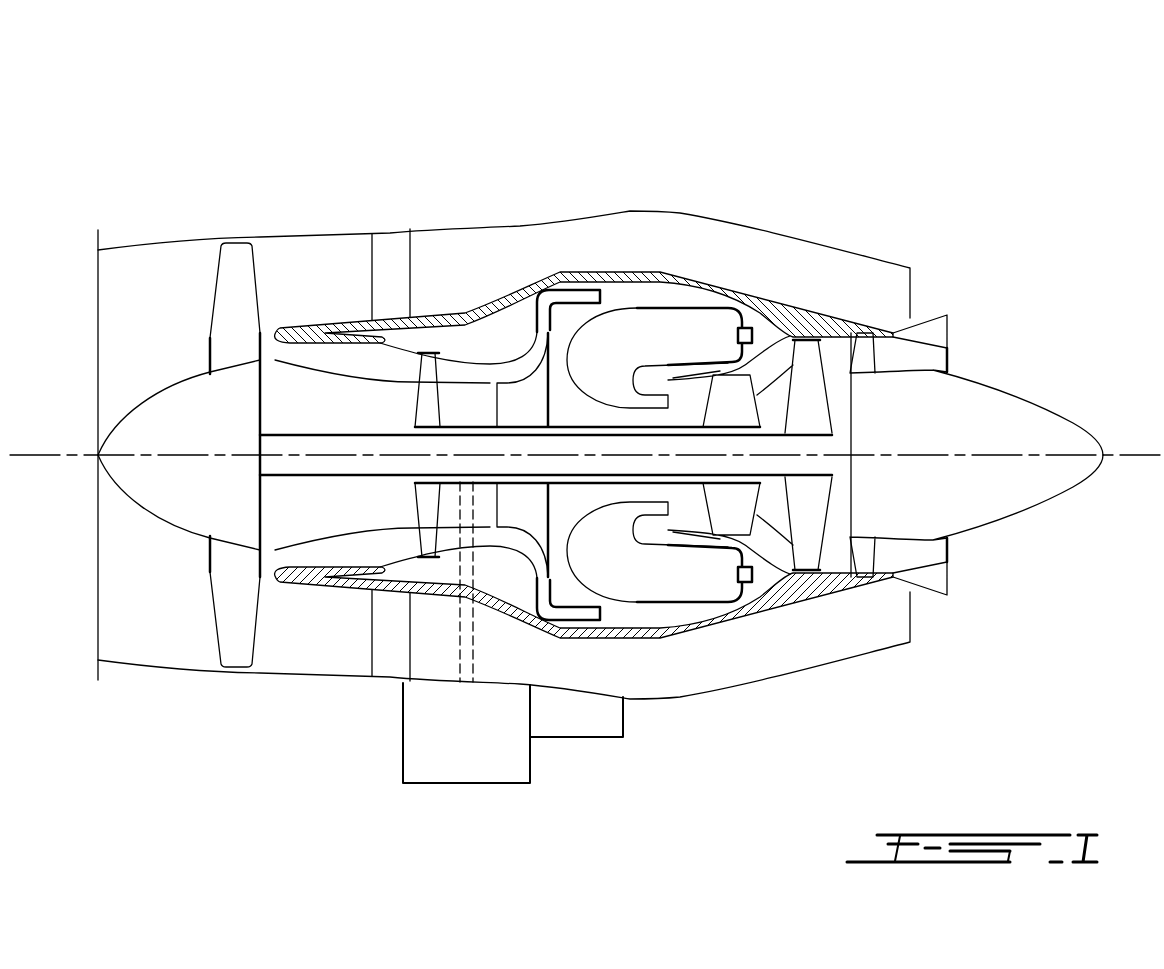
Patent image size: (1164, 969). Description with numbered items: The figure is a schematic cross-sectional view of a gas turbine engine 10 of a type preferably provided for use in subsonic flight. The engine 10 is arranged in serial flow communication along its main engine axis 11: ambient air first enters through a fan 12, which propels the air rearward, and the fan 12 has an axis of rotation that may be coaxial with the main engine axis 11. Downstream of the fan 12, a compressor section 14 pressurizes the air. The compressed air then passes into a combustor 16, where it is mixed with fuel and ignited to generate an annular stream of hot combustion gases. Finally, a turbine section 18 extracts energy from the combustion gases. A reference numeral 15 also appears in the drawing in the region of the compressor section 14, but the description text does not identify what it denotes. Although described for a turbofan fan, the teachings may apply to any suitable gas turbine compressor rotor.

The gas turbine engine 10 is at (818, 118).
The main engine axis 11 is at (1138, 454).
The fan 12 is at (232, 592).
The compressor section 14 is at (458, 365).
The compressor vane 15 is at (428, 357).
The combustor 16 is at (647, 337).
The turbine section 18 is at (770, 513).